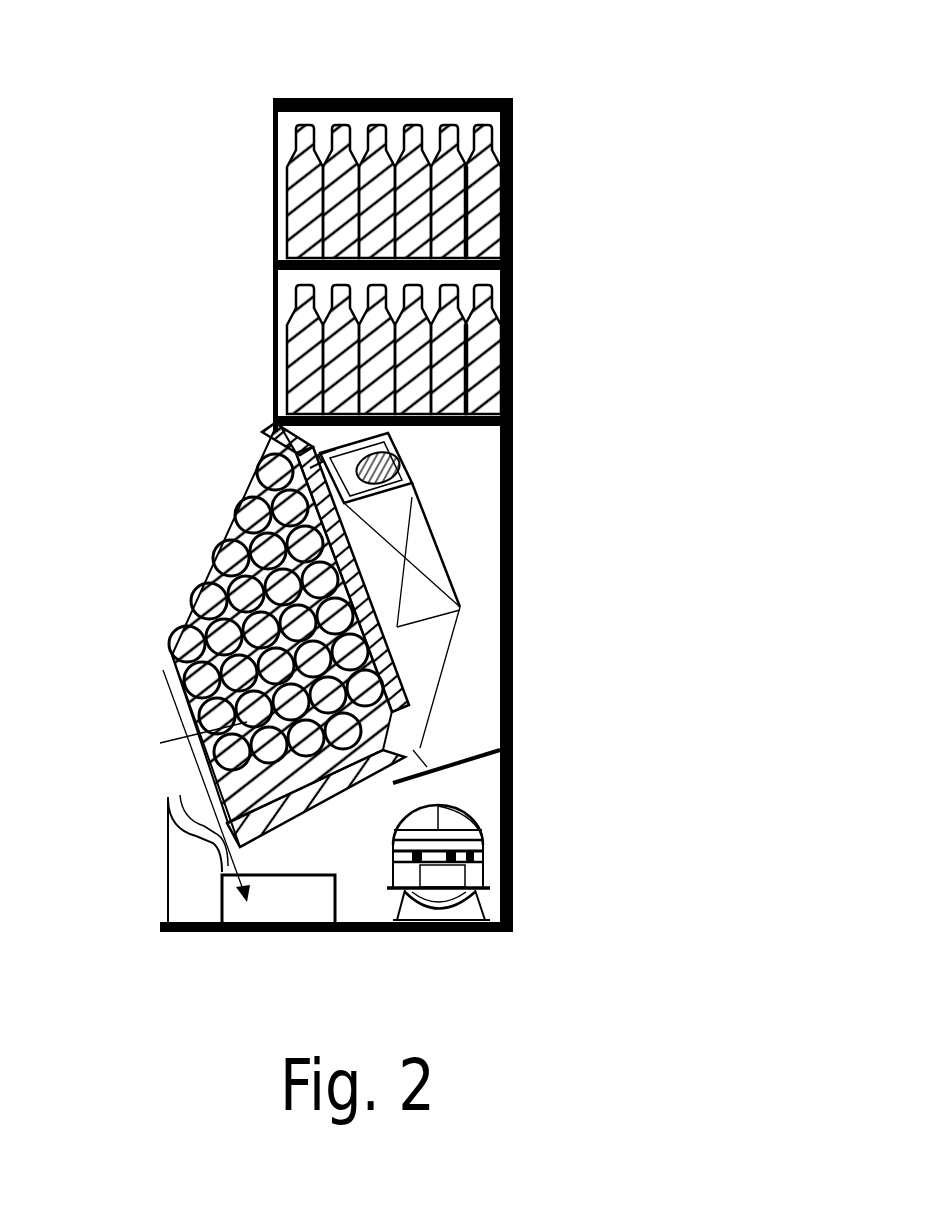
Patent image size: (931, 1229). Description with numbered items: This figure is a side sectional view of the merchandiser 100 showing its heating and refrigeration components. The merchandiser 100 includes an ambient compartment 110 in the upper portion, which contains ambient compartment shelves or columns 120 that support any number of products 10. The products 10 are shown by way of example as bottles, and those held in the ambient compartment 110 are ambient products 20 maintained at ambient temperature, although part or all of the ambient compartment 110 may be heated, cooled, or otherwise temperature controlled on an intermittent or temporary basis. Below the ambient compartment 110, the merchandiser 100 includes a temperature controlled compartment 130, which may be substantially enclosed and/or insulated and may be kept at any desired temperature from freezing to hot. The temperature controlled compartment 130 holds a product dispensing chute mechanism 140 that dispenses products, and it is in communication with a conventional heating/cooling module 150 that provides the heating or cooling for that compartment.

The merchandiser 100 is at (145, 68).
The products 10 is at (440, 133).
The ambient products 20 is at (482, 130).
The ambient compartment 110 is at (521, 189).
The ambient compartment shelves or columns 120 is at (505, 272).
The temperature controlled compartment 130 is at (165, 642).
The product dispensing chute mechanisms 140 is at (216, 540).
The heating/cooling module 150 is at (440, 553).